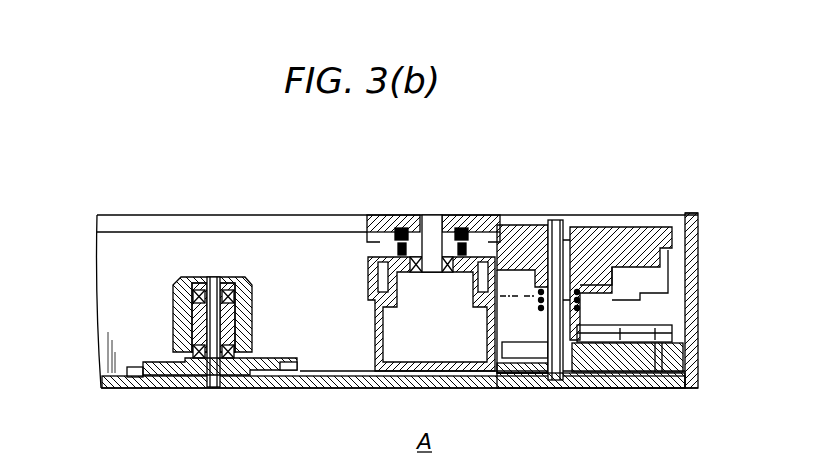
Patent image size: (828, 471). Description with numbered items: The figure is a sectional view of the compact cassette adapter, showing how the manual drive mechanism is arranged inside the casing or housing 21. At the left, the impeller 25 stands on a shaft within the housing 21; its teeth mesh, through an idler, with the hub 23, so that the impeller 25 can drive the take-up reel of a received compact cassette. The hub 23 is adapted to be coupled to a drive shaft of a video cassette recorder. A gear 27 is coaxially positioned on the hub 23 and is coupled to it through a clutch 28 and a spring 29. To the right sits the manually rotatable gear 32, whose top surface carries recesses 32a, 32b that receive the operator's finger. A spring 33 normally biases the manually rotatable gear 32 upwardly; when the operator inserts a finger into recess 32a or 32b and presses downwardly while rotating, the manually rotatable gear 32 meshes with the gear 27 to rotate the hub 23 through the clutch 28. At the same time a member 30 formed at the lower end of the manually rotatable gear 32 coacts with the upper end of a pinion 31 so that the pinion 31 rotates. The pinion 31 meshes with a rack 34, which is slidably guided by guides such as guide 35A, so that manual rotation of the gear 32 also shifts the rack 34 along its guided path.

The casing or housing 21 is at (188, 230).
The hub 23 is at (348, 386).
The impeller 25 is at (257, 381).
The gear 27 is at (374, 272).
The clutch 28 is at (367, 292).
The spring 29 is at (402, 226).
The member 30 is at (582, 291).
The pinion 31 is at (577, 381).
The manually rotatable gear 32 is at (612, 218).
The recess 32a is at (520, 222).
The recess 32b is at (648, 220).
The spring 33 is at (582, 316).
The rack 34 is at (604, 344).
The guide 35A is at (643, 344).